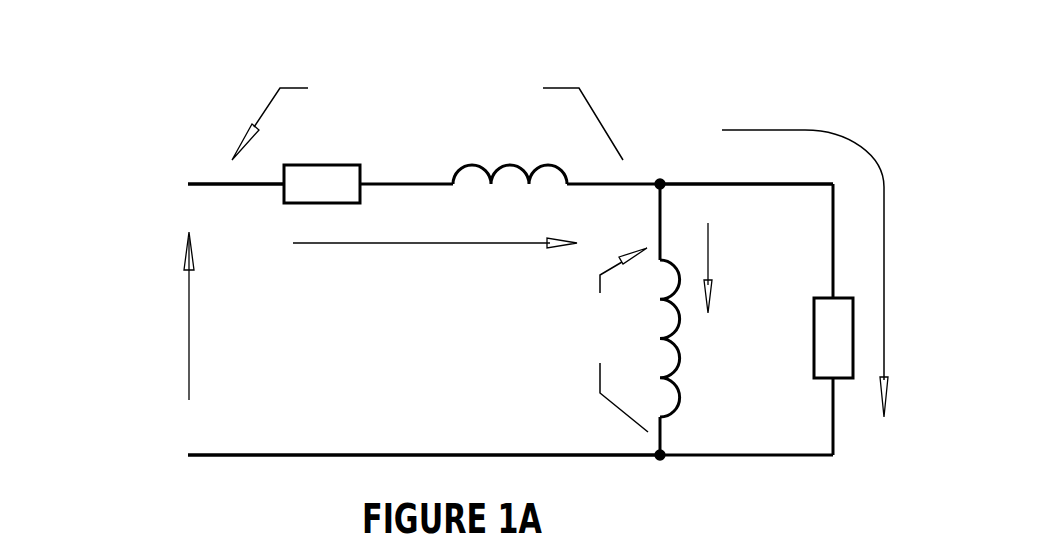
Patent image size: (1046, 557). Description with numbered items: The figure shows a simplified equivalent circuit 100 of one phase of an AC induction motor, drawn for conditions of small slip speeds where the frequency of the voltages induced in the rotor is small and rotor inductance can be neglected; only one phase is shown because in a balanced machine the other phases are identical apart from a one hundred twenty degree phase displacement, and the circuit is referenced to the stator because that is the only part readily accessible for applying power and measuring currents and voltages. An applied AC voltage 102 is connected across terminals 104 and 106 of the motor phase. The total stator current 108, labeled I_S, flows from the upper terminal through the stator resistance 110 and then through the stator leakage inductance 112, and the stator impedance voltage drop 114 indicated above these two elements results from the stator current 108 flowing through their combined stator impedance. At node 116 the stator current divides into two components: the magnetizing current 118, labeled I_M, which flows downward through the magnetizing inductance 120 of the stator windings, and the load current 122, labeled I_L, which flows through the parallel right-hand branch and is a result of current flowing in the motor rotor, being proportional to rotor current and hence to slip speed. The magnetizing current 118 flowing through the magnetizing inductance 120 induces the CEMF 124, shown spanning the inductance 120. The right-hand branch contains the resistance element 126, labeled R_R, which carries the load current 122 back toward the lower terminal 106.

The equivalent circuit 100 is at (108, 290).
The applied AC voltage 102 is at (188, 330).
The terminal 104 is at (237, 185).
The terminal 106 is at (237, 454).
The total stator current 108 is at (527, 245).
The stator resistance 110 is at (287, 165).
The stator leakage inductance 112 is at (470, 164).
The stator impedance voltage drop 114 is at (254, 122).
The node 116 is at (664, 180).
The magnetizing current 118 is at (710, 270).
The magnetizing inductance 120 is at (677, 373).
The load current 122 is at (782, 130).
The CEMF 124 is at (600, 389).
The rotor resistance R_R 126 is at (812, 365).